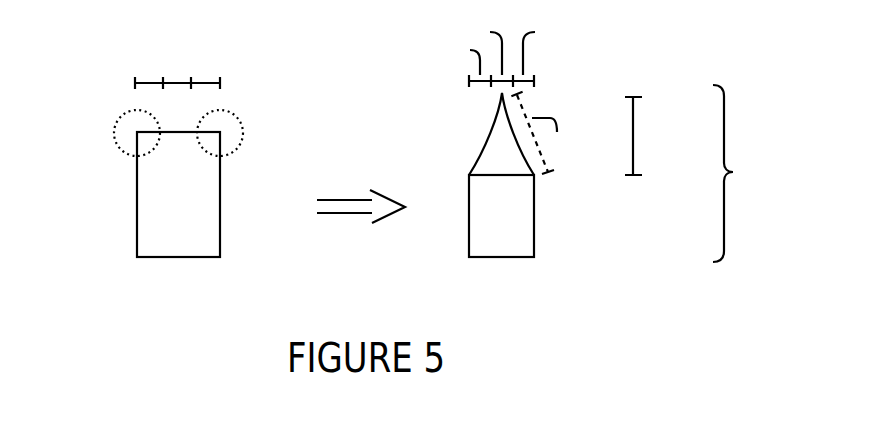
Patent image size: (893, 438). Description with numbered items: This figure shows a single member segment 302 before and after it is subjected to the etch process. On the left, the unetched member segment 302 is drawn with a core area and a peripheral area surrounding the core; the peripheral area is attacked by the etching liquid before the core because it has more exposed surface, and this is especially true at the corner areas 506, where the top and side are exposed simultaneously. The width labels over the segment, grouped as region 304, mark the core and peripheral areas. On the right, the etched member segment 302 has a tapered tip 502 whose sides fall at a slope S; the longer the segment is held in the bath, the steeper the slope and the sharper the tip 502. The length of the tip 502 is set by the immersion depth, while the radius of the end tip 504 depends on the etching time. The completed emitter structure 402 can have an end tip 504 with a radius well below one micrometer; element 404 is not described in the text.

The member segment 302 is at (137, 235).
The surface region (width A) 304 is at (178, 132).
The corner areas 506 is at (112, 137).
The end tip 504 is at (502, 97).
The tip 502 is at (633, 145).
The emitter structure 402 is at (755, 173).
The lower element 404 is at (507, 434).